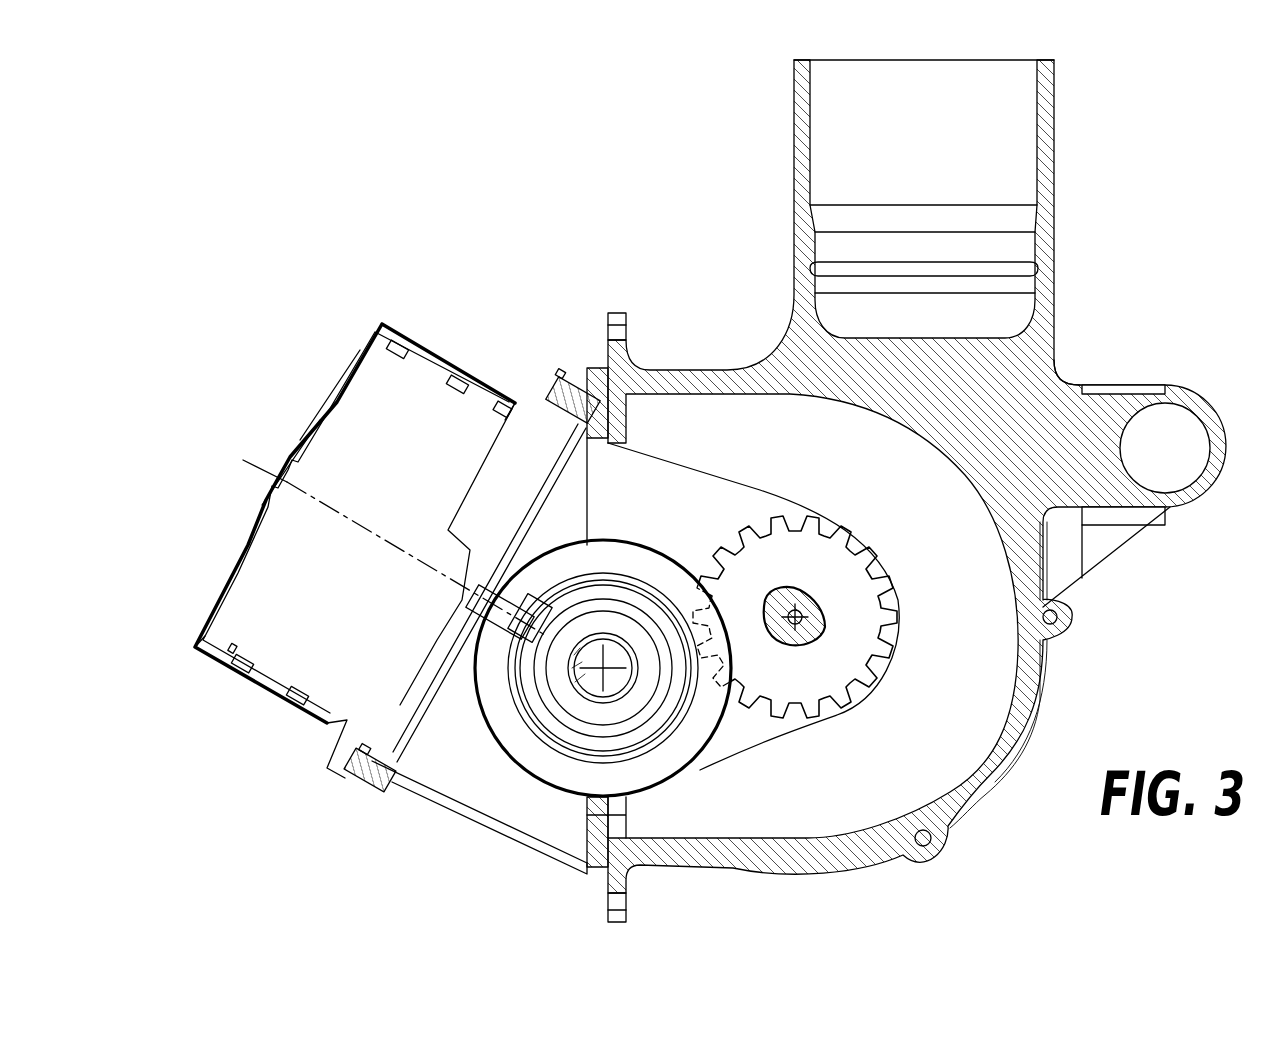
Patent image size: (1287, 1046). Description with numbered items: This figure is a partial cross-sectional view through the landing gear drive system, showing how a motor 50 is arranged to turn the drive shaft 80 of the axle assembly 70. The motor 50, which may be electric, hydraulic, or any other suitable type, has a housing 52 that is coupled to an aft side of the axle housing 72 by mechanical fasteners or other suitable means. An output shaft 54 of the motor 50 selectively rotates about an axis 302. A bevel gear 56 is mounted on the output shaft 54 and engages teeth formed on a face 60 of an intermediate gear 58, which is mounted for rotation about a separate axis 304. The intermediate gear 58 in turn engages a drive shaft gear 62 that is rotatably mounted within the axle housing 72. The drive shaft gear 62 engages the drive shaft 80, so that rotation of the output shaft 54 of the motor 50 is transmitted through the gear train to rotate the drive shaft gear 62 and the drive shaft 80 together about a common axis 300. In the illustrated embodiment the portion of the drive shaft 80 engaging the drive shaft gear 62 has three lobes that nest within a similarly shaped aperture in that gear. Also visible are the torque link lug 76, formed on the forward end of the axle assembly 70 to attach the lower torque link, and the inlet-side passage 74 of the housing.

The motor 50 is at (285, 650).
The housing 52 is at (203, 628).
The output shaft 54 is at (603, 668).
The bevel gear 56 is at (503, 615).
The intermediate gear 58 is at (543, 787).
The face 60 is at (640, 776).
The drive shaft gear 62 is at (837, 668).
The axle assembly 70 is at (1204, 153).
The axle housing 72 is at (1057, 358).
The inlet pipe 74 is at (975, 58).
The torque link lug 76 is at (1207, 424).
The drive shaft 80 is at (823, 627).
The common axis 300 is at (800, 617).
The axis 302 is at (256, 468).
The axis 304 is at (580, 668).